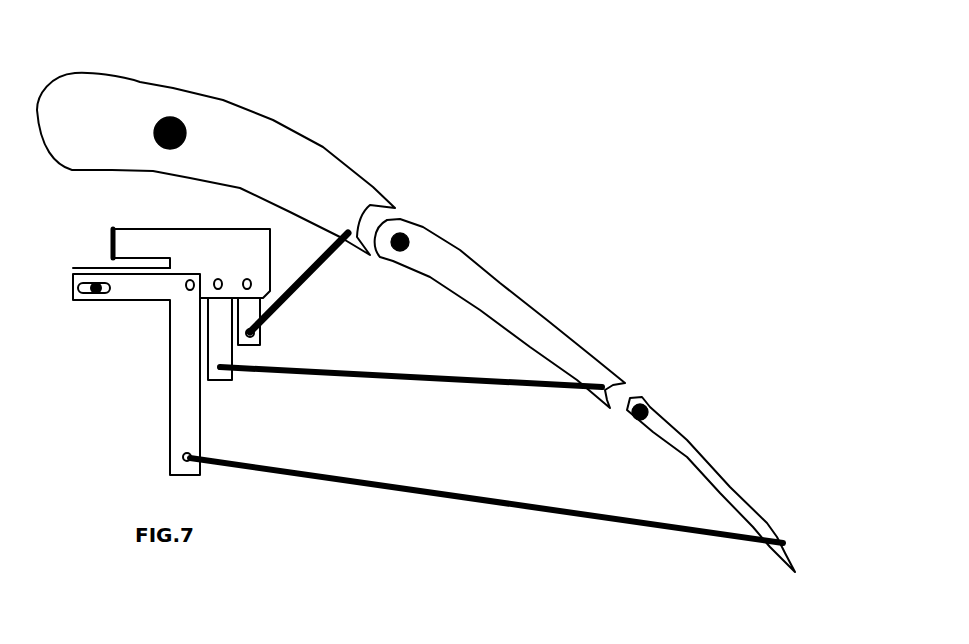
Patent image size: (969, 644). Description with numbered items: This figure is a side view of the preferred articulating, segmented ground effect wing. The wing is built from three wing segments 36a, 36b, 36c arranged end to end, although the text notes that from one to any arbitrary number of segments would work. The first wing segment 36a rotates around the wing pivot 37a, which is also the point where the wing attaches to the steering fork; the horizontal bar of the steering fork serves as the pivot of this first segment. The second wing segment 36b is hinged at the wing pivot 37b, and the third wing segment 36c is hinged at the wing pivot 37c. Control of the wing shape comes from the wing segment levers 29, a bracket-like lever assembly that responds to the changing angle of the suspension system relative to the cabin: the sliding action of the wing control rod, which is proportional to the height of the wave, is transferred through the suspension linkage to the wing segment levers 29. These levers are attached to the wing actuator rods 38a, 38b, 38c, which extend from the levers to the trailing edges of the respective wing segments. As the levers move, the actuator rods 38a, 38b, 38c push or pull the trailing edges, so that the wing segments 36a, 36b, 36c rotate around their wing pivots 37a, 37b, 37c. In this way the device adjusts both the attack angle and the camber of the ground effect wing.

The wing segment levers 29 is at (163, 402).
The wing segment 36a is at (285, 163).
The wing segment 36b is at (540, 323).
The wing segment 36c is at (697, 458).
The wing pivot 37a is at (150, 125).
The wing pivot 37b is at (413, 232).
The wing pivot 37c is at (650, 405).
The wing actuator rod 38a is at (303, 305).
The wing actuator rod 38b is at (445, 398).
The wing actuator rod 38c is at (517, 502).